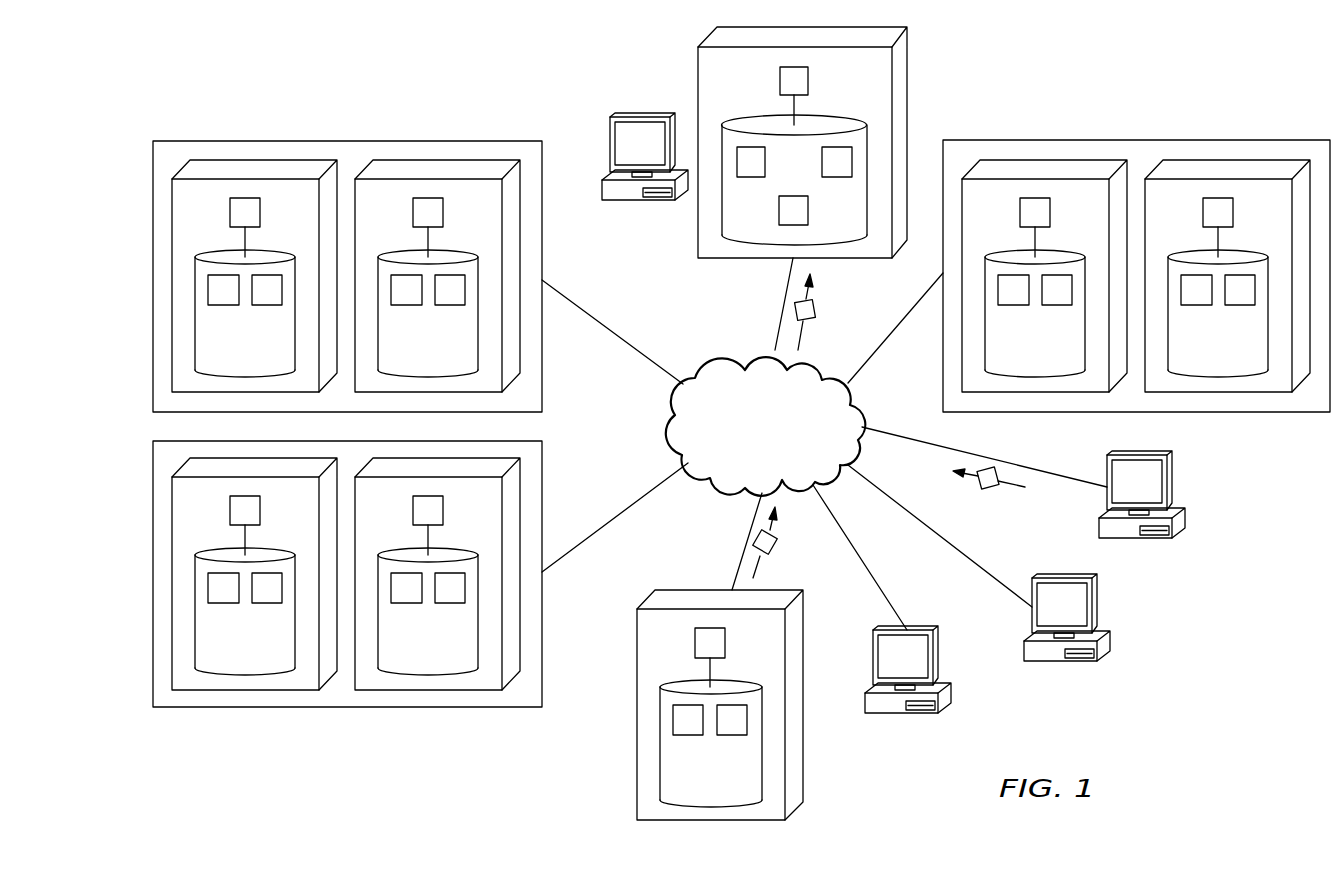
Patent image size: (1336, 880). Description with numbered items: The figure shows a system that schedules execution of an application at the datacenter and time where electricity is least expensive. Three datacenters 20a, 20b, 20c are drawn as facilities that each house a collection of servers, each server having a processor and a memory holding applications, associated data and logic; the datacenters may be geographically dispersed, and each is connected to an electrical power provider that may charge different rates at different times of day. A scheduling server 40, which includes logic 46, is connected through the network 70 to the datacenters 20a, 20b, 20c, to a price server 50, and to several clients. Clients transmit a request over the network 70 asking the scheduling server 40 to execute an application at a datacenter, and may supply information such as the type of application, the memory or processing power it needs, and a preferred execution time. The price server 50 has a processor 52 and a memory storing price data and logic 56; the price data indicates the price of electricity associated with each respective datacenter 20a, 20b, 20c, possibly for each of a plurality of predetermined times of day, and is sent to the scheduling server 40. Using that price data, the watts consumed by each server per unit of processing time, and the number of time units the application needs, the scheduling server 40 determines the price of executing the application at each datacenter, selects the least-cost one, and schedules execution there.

The datacenter 20a is at (347, 247).
The datacenter 20b is at (347, 606).
The datacenter 20c is at (1136, 246).
The scheduling server 40 is at (773, 142).
The logic 46 is at (838, 188).
The price server 50 is at (689, 705).
The processor 52 is at (733, 653).
The logic 56 is at (687, 746).
The network 70 is at (754, 436).